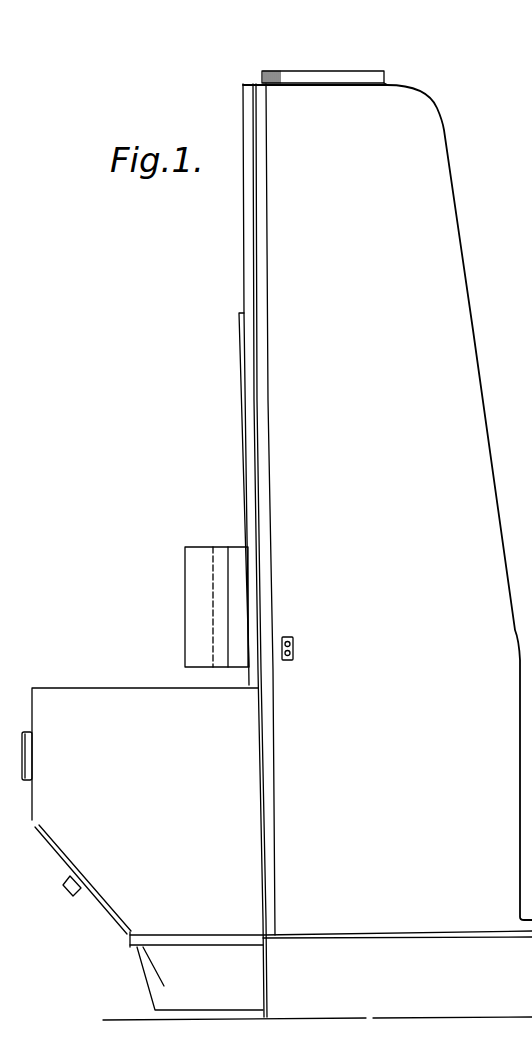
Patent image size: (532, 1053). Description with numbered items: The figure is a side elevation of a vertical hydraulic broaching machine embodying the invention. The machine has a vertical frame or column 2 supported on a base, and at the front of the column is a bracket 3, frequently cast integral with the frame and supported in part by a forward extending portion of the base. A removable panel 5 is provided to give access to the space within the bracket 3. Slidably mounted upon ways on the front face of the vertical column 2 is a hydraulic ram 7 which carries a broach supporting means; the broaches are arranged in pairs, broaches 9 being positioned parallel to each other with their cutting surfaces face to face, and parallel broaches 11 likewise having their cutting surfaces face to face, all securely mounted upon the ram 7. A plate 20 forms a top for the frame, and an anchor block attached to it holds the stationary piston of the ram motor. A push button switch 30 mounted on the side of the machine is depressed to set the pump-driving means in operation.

The vertical frame or column 2 is at (455, 283).
The bracket 3 is at (83, 848).
The removable panel 5 is at (107, 913).
The hydraulic ram 7 is at (239, 404).
The broaches 9 is at (150, 970).
The parallel broaches 11 is at (190, 588).
The plate 20 is at (368, 76).
The switch 30 is at (293, 647).